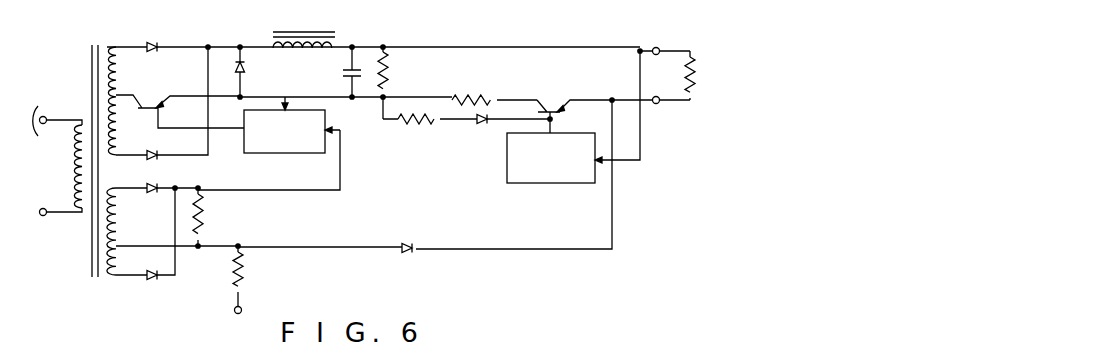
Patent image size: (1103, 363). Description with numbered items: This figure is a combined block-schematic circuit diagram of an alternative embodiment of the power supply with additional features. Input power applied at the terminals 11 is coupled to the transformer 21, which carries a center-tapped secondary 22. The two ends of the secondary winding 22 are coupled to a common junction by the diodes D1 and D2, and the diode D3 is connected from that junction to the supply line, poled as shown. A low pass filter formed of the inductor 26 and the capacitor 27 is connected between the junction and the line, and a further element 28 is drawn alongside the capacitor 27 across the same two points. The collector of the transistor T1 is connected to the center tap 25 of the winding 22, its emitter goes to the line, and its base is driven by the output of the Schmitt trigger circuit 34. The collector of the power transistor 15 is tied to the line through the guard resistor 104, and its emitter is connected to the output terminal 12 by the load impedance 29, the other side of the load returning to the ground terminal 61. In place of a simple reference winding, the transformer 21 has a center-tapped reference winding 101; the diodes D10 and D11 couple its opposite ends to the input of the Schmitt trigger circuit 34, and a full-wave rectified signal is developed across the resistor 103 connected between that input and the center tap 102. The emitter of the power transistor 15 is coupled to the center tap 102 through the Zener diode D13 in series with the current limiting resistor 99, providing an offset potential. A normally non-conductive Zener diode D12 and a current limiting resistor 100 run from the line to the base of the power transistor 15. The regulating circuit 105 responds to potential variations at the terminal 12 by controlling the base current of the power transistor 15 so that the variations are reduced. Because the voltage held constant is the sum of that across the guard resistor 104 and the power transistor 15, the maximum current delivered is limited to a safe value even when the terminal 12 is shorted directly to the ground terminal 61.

The terminals 11 is at (45, 114).
The terminal 12 is at (653, 48).
The power transistor 15 is at (548, 98).
The transformer 21 is at (78, 221).
The center-tapped secondary 22 is at (118, 82).
The center tap 25 is at (180, 112).
The inductor 26 is at (335, 45).
The capacitor 27 is at (343, 74).
The resistor 28 is at (389, 72).
The load impedance 29 is at (695, 80).
The Schmitt trigger circuit 34 is at (272, 154).
The ground terminal 61 is at (656, 104).
The current limiting resistor 99 is at (243, 282).
The current limiting resistor 100 is at (418, 123).
The center-tapped reference winding 101 is at (123, 280).
The center tap 102 is at (120, 247).
The resistor 103 is at (205, 229).
The guard resistor 104 is at (473, 92).
The regulating circuit 105 is at (506, 166).
The diode D1 is at (158, 37).
The diode D2 is at (142, 147).
The diode D3 is at (254, 72).
The diode D10 is at (152, 203).
The diode D11 is at (156, 292).
The Zener diode D12 is at (506, 127).
The Zener diode D13 is at (333, 259).
The transistor T1 is at (162, 89).